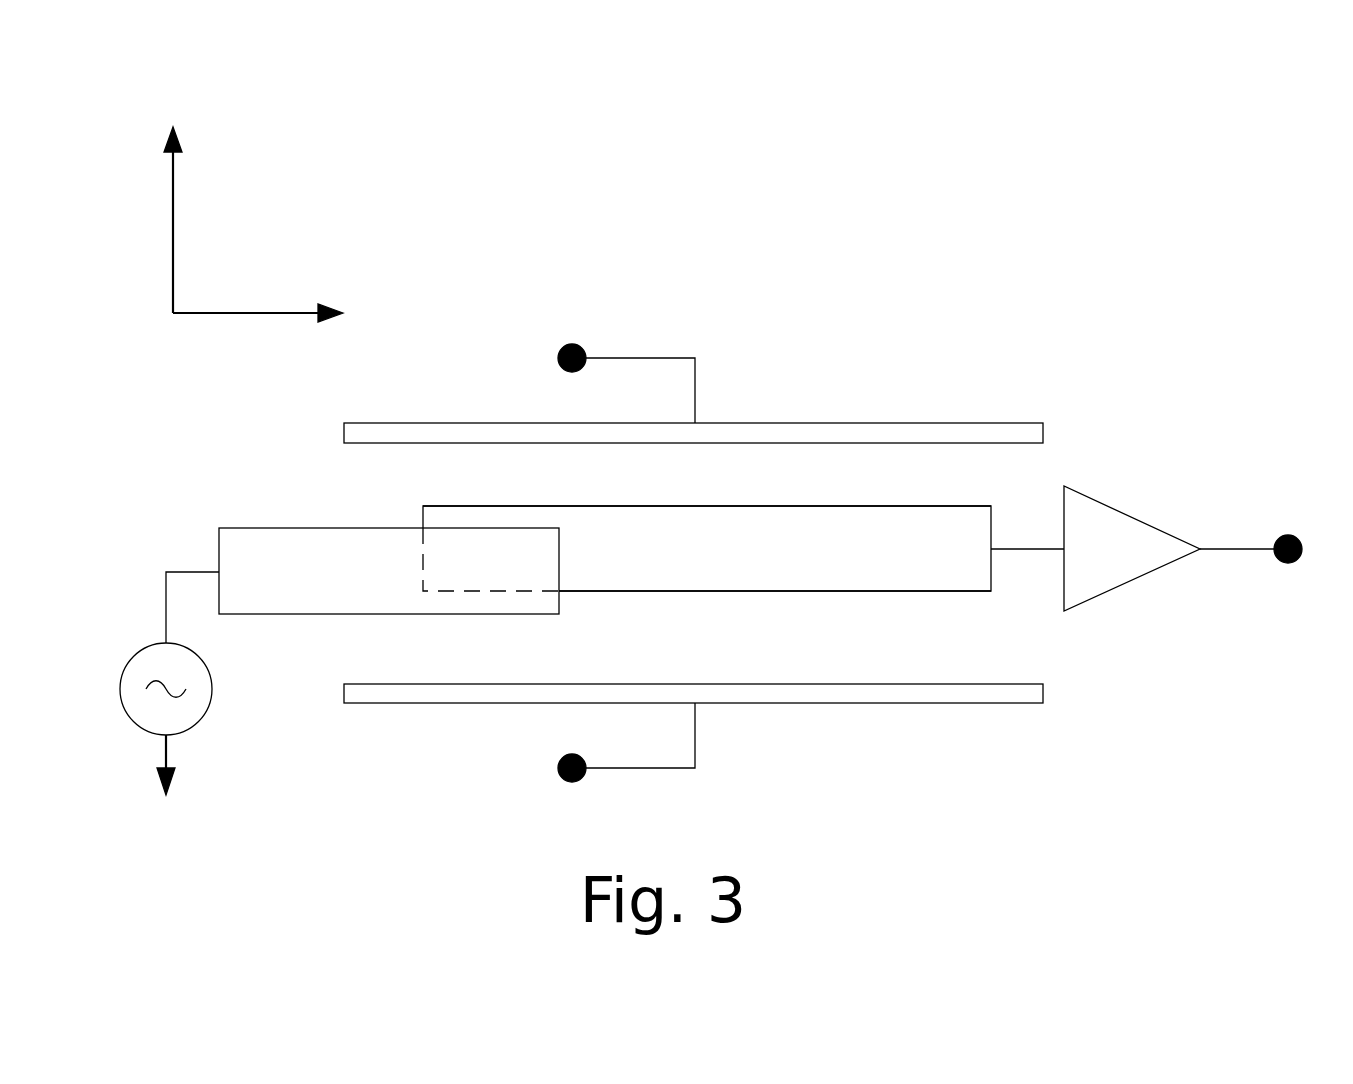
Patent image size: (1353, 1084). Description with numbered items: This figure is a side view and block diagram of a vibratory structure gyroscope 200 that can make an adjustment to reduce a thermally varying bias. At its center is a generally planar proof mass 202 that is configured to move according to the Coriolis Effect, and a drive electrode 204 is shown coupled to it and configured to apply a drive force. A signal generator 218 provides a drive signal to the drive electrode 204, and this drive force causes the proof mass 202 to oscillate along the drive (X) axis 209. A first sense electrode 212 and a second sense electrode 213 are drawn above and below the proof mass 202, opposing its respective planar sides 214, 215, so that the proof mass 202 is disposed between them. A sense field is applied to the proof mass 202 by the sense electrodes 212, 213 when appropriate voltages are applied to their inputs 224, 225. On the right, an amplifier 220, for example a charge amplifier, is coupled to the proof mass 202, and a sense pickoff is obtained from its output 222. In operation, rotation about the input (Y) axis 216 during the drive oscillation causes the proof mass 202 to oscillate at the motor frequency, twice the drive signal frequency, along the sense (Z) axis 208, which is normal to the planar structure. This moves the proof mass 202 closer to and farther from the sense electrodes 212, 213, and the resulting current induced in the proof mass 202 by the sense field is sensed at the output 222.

The vibratory structure gyroscope 200 is at (1133, 207).
The proof mass 202 is at (824, 514).
The drive electrode 204 is at (263, 540).
The sense (Z) axis 208 is at (173, 202).
The drive (X) axis 209 is at (242, 313).
The first sense electrode 212 is at (741, 423).
The second sense electrode 213 is at (777, 703).
The planar side 214 is at (936, 502).
The planar side 215 is at (937, 596).
The input (Y) axis 216 is at (140, 241).
The signal generator 218 is at (143, 658).
The amplifier 220 is at (1123, 512).
The output 222 is at (1292, 536).
The input 224 is at (577, 345).
The input 225 is at (566, 782).